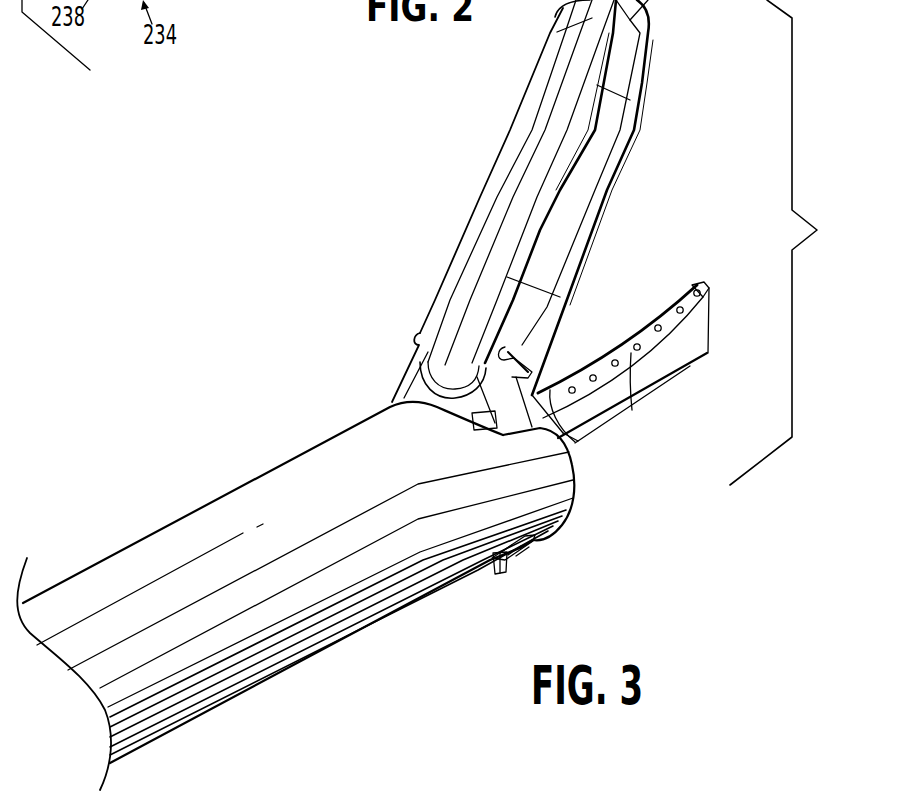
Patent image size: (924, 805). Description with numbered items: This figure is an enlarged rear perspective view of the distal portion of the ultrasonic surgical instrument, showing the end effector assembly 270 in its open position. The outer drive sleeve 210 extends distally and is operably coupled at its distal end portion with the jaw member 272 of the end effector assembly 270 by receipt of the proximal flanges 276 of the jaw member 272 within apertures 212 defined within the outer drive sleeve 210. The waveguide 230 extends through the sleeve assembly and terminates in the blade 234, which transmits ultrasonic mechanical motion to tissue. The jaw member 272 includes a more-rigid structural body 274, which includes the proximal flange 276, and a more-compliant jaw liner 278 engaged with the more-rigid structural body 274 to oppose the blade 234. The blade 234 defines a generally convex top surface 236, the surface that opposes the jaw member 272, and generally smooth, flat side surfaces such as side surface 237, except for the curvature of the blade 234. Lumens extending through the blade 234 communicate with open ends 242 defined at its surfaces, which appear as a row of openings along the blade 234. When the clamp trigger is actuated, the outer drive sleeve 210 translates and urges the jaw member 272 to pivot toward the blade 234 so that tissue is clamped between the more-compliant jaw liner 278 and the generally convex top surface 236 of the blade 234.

The outer drive sleeve 210 is at (208, 643).
The apertures 212 is at (530, 543).
The waveguide 230 is at (565, 434).
The blade 234 is at (687, 382).
The generally convex top surface 236 is at (705, 282).
The side surface 237 is at (693, 337).
The open ends 242 is at (573, 386).
The end effector assembly 270 is at (791, 242).
The jaw member 272 is at (467, 175).
The more-rigid structural body 274 is at (437, 297).
The proximal flanges 276 is at (498, 573).
The more-compliant jaw liner 278 is at (610, 200).